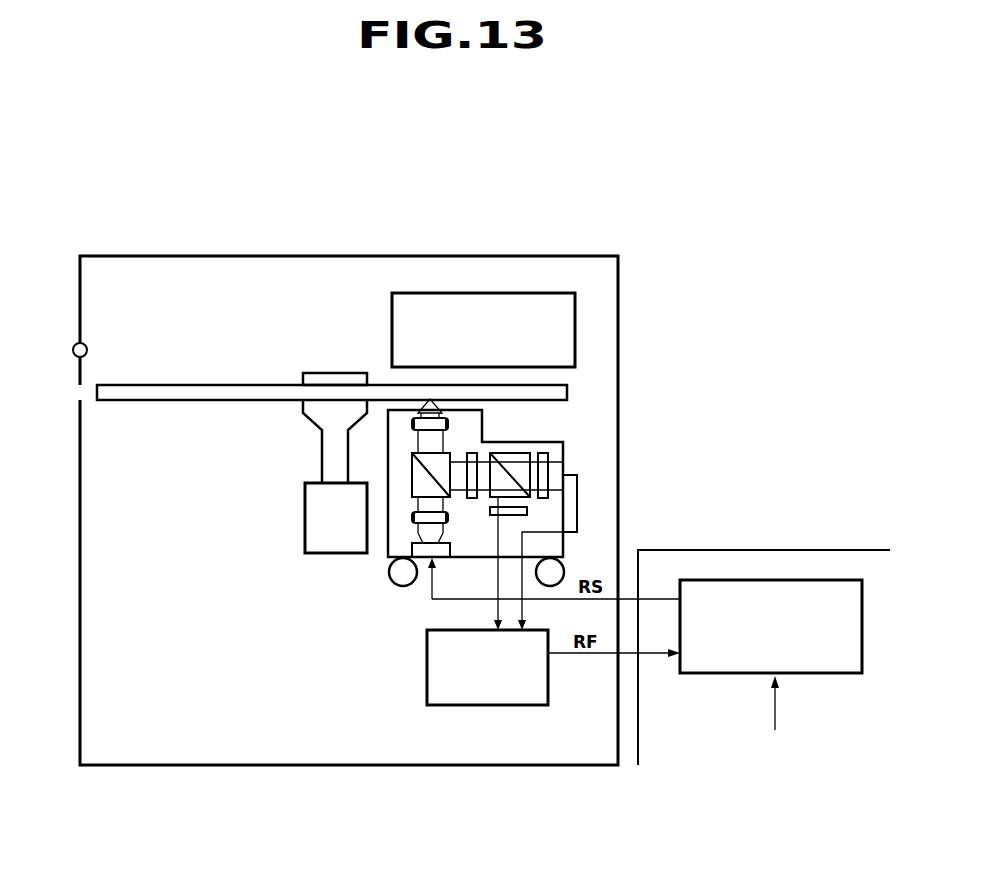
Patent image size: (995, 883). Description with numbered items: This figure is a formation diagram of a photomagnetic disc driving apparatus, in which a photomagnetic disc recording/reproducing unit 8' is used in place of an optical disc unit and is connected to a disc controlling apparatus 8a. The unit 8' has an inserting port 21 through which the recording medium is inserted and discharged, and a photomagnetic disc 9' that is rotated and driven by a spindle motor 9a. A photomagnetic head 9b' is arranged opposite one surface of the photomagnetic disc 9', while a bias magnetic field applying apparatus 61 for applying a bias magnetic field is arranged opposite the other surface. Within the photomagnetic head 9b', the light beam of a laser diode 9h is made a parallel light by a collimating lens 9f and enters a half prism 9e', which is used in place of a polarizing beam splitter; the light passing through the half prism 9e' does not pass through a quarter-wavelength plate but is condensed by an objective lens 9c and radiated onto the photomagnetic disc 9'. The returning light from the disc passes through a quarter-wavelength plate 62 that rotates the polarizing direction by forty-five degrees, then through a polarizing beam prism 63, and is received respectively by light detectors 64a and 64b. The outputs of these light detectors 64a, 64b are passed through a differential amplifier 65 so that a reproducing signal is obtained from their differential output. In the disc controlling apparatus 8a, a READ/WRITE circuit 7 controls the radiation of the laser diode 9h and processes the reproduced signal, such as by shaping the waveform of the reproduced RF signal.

The photomagnetic disc recording/reproducing unit 8' is at (349, 471).
The inserting port 21 is at (80, 370).
The photomagnetic disc 9' is at (332, 363).
The spindle motor 9a is at (305, 528).
The bias magnetic field applying apparatus 61 is at (392, 312).
The objective lens 9c is at (412, 424).
The half prism 9e' is at (345, 475).
The collimating lens 9f is at (412, 518).
The laser diode 9h is at (425, 575).
The ¼-wavelength plate 62 is at (471, 453).
The polarizing beam prism 63 is at (528, 453).
The light detector 64a is at (565, 462).
The light detector 64b is at (528, 512).
The photomagnetic head 9b' is at (601, 548).
The differential amplifier 65 is at (475, 705).
The disc controlling apparatus 8a is at (800, 550).
The READ/WRITE circuit 7 is at (826, 675).